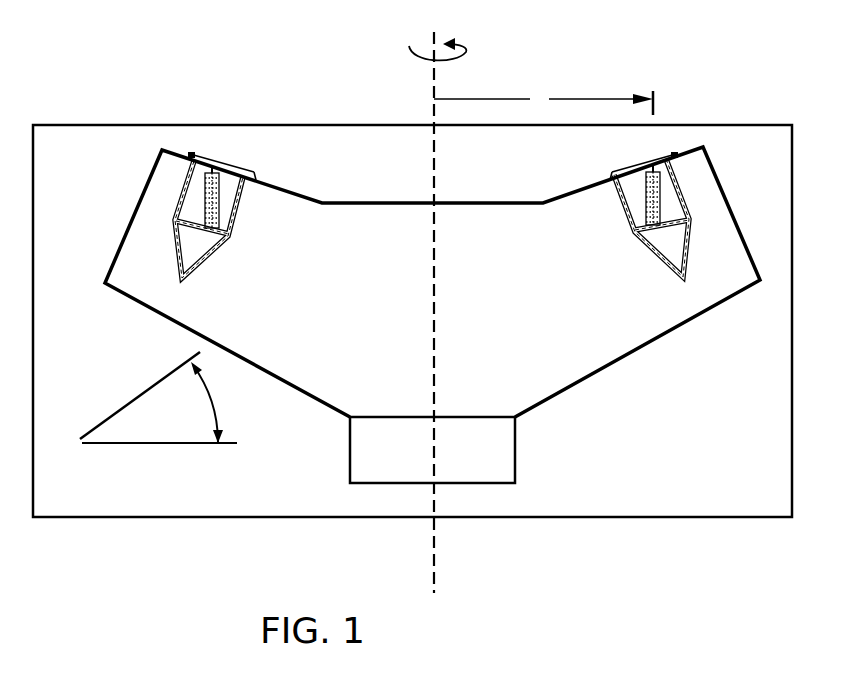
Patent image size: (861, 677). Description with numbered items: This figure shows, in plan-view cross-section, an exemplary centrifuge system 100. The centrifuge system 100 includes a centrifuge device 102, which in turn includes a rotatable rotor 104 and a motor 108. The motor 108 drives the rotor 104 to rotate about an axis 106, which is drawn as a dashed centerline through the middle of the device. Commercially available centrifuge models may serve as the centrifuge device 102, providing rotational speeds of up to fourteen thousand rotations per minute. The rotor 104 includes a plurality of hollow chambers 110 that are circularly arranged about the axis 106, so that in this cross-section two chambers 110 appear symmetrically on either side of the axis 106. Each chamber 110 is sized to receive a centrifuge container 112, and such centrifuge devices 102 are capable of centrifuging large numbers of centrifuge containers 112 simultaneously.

The centrifuge system 100 is at (620, 552).
The centrifuge device 102 is at (794, 484).
The rotor 104 is at (622, 356).
The axis 106 is at (436, 263).
The motor 108 is at (517, 443).
The hollow chamber 110 is at (229, 234).
The centrifuge container 112 is at (254, 174).